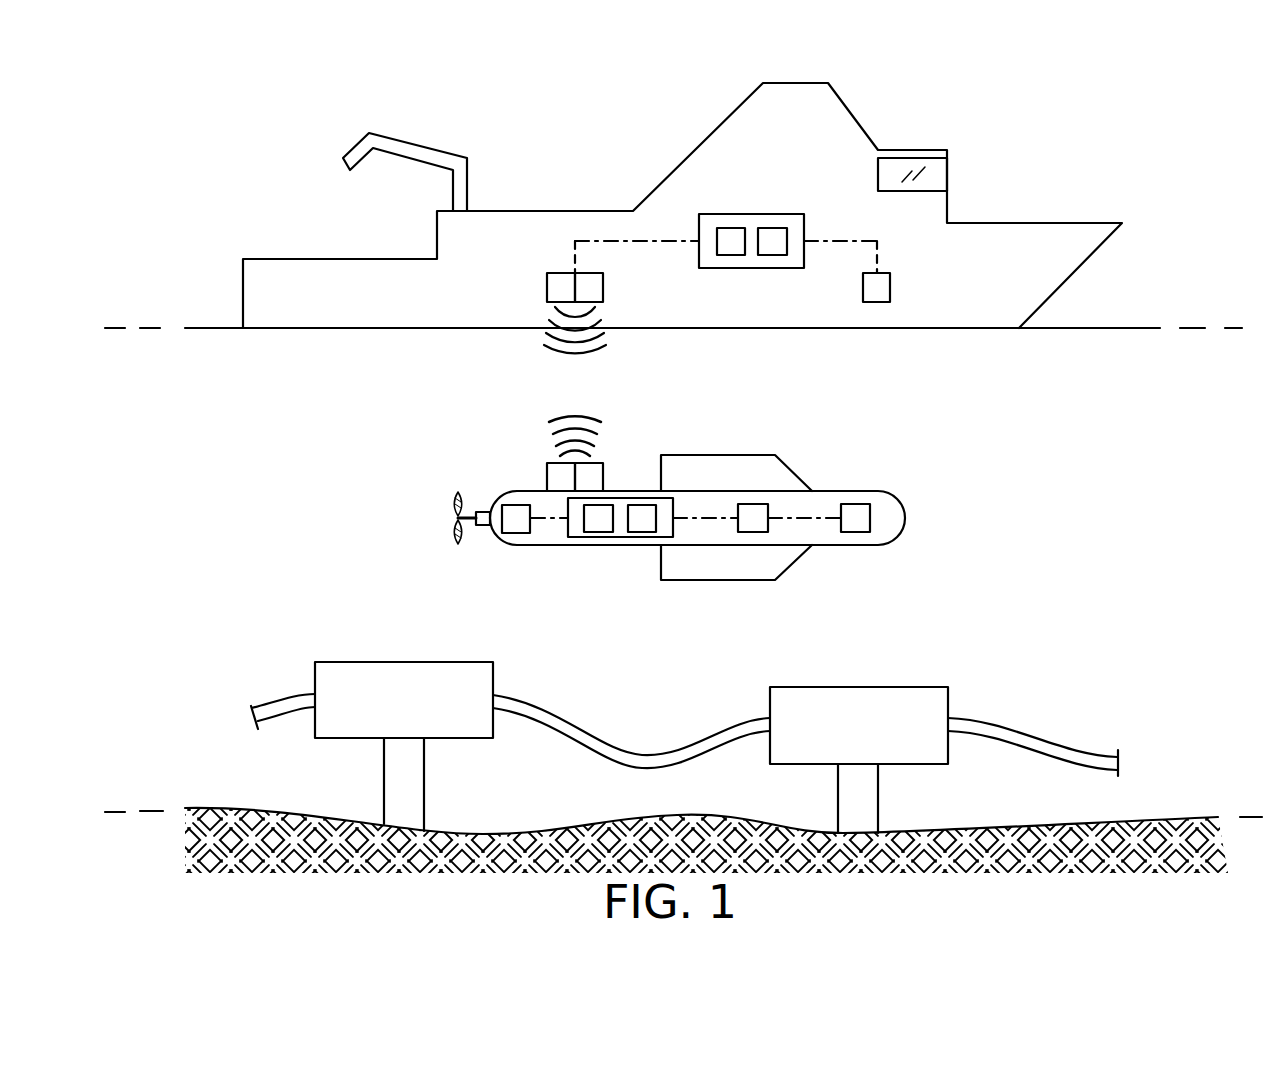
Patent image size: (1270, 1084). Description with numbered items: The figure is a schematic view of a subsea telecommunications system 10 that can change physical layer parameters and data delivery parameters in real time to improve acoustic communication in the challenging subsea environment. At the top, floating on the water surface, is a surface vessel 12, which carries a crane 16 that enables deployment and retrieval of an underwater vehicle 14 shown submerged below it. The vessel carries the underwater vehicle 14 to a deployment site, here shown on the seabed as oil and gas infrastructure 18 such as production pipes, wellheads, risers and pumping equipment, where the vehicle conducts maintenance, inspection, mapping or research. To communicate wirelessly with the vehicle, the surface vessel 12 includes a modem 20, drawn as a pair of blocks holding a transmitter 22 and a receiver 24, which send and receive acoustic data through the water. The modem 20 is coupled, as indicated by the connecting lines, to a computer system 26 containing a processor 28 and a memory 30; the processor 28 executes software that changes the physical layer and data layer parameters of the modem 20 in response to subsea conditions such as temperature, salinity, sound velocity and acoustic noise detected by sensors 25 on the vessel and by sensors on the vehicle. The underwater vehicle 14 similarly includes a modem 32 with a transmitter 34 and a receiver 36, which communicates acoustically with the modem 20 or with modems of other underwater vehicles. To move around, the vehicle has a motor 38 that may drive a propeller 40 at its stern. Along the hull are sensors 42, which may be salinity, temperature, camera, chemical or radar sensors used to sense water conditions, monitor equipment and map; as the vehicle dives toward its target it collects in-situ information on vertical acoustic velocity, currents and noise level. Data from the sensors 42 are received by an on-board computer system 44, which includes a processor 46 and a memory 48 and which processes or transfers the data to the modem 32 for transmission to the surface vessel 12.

The subsea telecommunications system 10 is at (1184, 178).
The surface vessel 12 is at (828, 128).
The underwater vehicle 14 is at (944, 480).
The crane 16 is at (418, 146).
The oil and gas infrastructure 18 is at (1121, 714).
The modem 20 is at (464, 303).
The transmitter 22 is at (547, 288).
The receiver 24 is at (603, 288).
The sensors 25 is at (890, 288).
The computer system 26 is at (727, 214).
The processor 28 is at (730, 255).
The memory 30 is at (773, 255).
The modem 32 is at (522, 452).
The transmitter 34 is at (547, 477).
The receiver 36 is at (603, 478).
The motor 38 is at (517, 545).
The propeller 40 is at (455, 504).
The sensors 42 is at (750, 504).
The computer system 44 is at (620, 537).
The processor 46 is at (598, 533).
The memory 48 is at (644, 533).